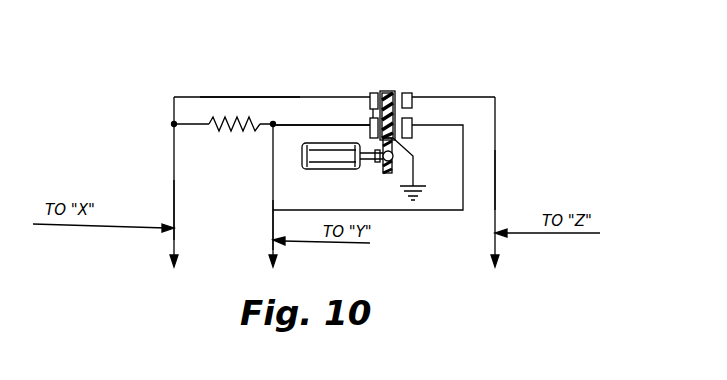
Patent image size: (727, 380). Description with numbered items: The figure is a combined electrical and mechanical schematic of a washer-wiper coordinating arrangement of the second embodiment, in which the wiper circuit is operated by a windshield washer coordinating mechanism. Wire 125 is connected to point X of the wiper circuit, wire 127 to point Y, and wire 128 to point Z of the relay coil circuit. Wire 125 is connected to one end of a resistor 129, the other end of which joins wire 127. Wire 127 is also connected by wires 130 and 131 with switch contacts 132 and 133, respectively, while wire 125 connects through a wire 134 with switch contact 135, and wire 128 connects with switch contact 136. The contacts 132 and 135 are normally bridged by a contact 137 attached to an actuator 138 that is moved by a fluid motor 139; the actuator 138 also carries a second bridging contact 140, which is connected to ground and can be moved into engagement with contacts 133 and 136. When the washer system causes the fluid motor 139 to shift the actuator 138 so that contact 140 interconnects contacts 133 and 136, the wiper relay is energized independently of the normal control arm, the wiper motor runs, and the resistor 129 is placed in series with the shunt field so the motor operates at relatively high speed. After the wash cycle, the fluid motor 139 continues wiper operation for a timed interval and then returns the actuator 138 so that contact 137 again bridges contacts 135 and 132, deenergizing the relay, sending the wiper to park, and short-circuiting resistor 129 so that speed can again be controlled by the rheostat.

The wire 125 is at (174, 213).
The wire 127 is at (273, 240).
The wire 128 is at (495, 184).
The resistor 129 is at (248, 135).
The wire 130 is at (325, 125).
The wire 131 is at (415, 212).
The switch contact 132 is at (370, 125).
The switch contact 133 is at (412, 125).
The wire 134 is at (253, 97).
The switch contact 135 is at (370, 93).
The switch contact 136 is at (412, 95).
The bridging contact 137 is at (387, 93).
The actuator 138 is at (385, 172).
The fluid motor 139 is at (325, 168).
The second bridging contact 140 is at (395, 93).